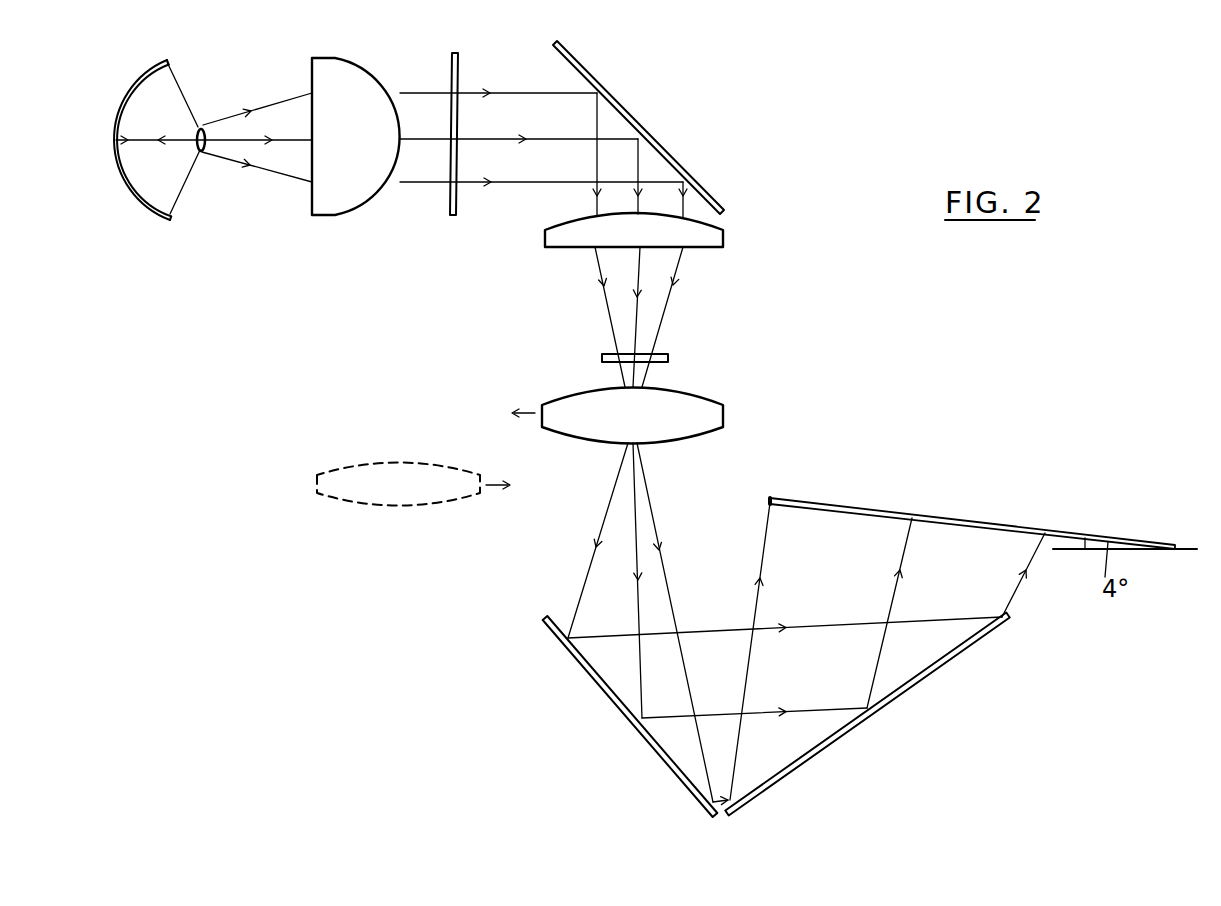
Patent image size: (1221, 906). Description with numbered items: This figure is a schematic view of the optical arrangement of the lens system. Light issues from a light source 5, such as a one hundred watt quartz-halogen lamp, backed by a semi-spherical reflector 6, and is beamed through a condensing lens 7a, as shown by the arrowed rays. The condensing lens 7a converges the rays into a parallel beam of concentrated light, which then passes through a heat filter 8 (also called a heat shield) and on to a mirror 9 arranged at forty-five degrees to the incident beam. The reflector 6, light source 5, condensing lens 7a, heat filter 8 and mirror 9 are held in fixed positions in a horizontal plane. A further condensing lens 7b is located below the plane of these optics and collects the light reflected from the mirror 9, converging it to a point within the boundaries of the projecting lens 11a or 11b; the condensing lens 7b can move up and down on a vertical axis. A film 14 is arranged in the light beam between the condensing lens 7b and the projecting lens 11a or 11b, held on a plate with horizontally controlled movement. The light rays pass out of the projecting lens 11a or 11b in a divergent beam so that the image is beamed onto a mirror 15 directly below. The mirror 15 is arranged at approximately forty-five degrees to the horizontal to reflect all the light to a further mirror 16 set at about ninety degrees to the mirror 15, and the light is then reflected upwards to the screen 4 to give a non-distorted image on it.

The screen 4 is at (988, 528).
The light source 5 is at (203, 152).
The semi-spherical reflector 6 is at (147, 209).
The condensing lens 7a is at (353, 172).
The condensing lens 7b is at (707, 238).
The heat filter 8 is at (448, 213).
The mirror 9 is at (636, 122).
The projecting lens 11a is at (685, 423).
The projecting lens 11b is at (400, 478).
The film 14 is at (600, 357).
The mirror 15 is at (603, 685).
The mirror 16 is at (893, 695).